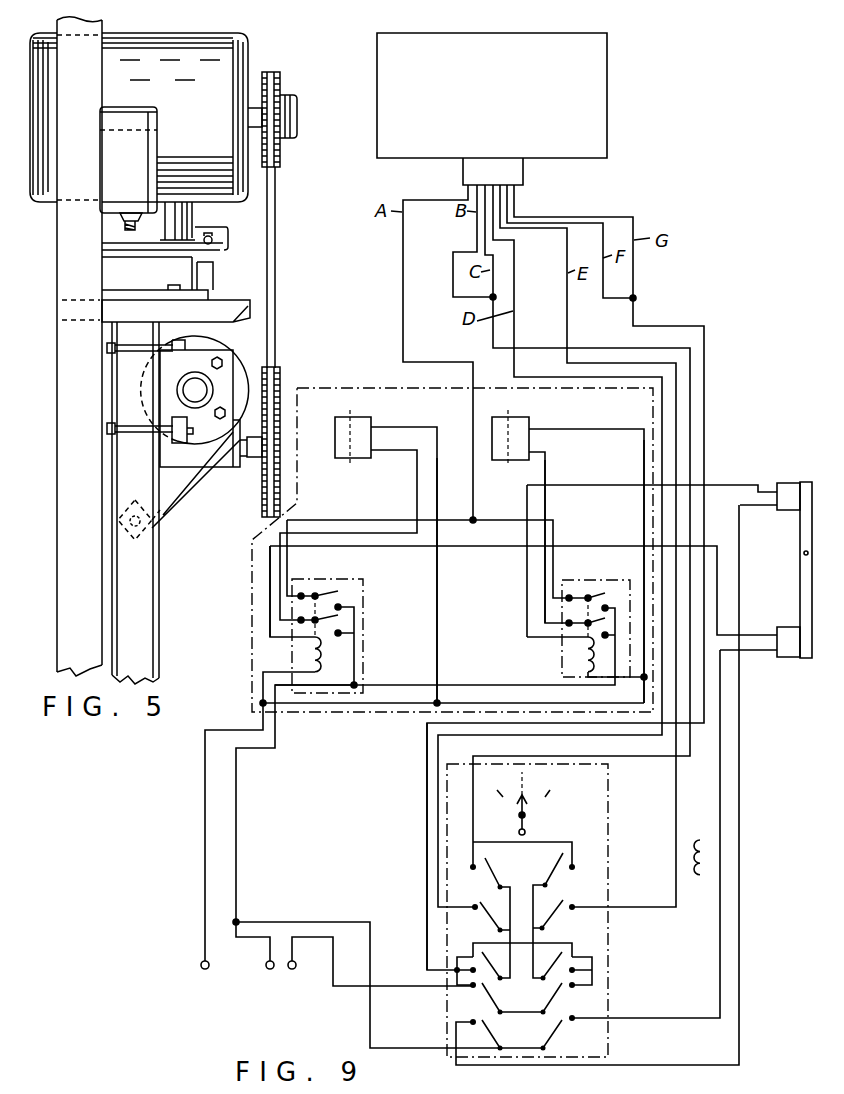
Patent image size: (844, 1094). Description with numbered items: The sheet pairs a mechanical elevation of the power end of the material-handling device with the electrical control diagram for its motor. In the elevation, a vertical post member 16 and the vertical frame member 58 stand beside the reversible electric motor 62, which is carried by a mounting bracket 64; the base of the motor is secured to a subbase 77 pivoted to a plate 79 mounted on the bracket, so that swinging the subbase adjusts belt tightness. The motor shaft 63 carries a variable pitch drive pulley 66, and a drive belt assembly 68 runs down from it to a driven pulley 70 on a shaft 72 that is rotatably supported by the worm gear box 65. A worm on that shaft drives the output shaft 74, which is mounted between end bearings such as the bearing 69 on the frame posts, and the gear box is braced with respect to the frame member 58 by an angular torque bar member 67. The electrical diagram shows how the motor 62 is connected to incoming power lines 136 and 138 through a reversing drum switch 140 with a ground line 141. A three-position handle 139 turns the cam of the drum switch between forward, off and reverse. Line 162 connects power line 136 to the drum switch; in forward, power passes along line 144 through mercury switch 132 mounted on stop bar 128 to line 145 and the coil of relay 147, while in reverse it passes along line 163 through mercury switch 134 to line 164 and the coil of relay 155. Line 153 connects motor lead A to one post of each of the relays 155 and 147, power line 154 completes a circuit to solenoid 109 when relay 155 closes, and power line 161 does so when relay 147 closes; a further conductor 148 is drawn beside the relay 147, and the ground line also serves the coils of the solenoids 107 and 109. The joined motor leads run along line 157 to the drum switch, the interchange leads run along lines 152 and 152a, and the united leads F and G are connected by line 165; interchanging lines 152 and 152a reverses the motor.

In FIG. 5, the vertical post member 16 is at (71, 642).
In FIG. 5, the vertical frame member 58 is at (147, 618).
In FIG. 5, the reversible electric motor 62 is at (248, 54).
In FIG. 9, the reversible electric motor 62 is at (509, 117).
In FIG. 5, the motor shaft 63 is at (246, 117).
In FIG. 5, the mounting bracket 64 is at (249, 300).
In FIG. 5, the worm gear box 65 is at (262, 400).
In FIG. 5, the variable pitch drive pulley 66 is at (282, 89).
In FIG. 5, the angular torque bar member 67 is at (182, 490).
In FIG. 5, the drive belt assembly 68 is at (276, 195).
In FIG. 5, the extreme end bearing 69 is at (195, 348).
In FIG. 5, the driven pulley 70 is at (240, 422).
In FIG. 5, the shaft 72 is at (251, 461).
In FIG. 5, the output shaft 74 is at (200, 389).
In FIG. 5, the subbase 77 is at (191, 283).
In FIG. 5, the plate 79 is at (136, 290).
In FIG. 9, the solenoid 107 is at (372, 420).
In FIG. 9, the solenoid 109 is at (530, 423).
In FIG. 9, the stop bar 128 is at (803, 566).
In FIG. 9, the mercury switch 132 is at (798, 517).
In FIG. 9, the mercury switch 134 is at (798, 628).
In FIG. 9, the power line 136 is at (262, 948).
In FIG. 9, the power line 138 is at (323, 947).
In FIG. 9, the three-position handle 139 is at (525, 816).
In FIG. 9, the reversing drum switch 140 is at (609, 885).
In FIG. 9, the ground line 141 is at (204, 903).
In FIG. 9, the line 144 is at (740, 767).
In FIG. 9, the line 145 is at (716, 486).
In FIG. 9, the relay 147 is at (561, 665).
In FIG. 9, the conductor 148 is at (644, 525).
In FIG. 9, the line 152 is at (514, 276).
In FIG. 9, the line 152a is at (568, 323).
In FIG. 9, the line 153 is at (392, 502).
In FIG. 9, the power line 154 is at (309, 545).
In FIG. 9, the relay 155 is at (363, 616).
In FIG. 9, the line 157 is at (676, 762).
In FIG. 9, the power line 161 is at (547, 476).
In FIG. 9, the line 162 is at (345, 906).
In FIG. 9, the line 163 is at (739, 980).
In FIG. 9, the line 164 is at (436, 548).
In FIG. 9, the line 165 is at (425, 828).